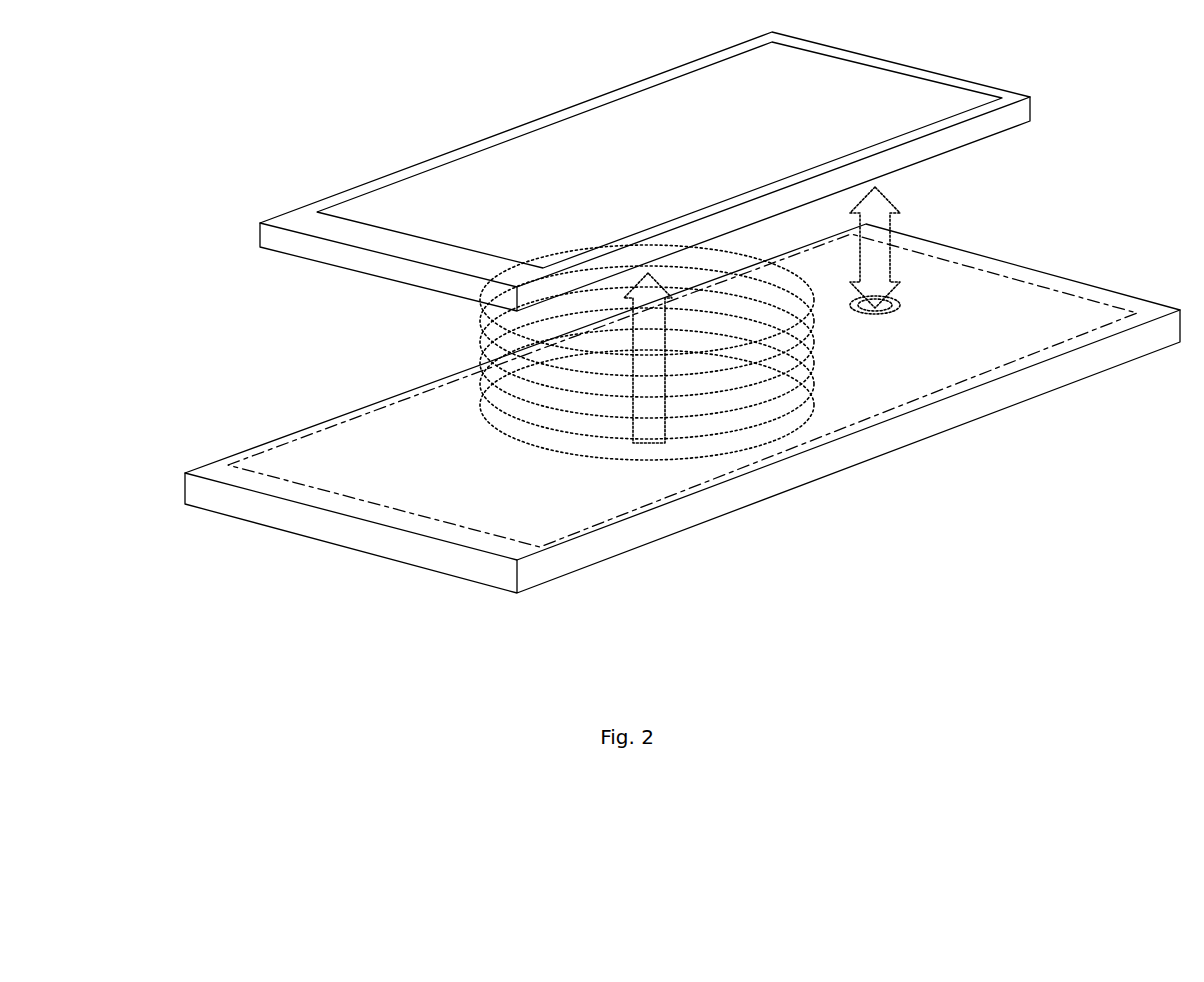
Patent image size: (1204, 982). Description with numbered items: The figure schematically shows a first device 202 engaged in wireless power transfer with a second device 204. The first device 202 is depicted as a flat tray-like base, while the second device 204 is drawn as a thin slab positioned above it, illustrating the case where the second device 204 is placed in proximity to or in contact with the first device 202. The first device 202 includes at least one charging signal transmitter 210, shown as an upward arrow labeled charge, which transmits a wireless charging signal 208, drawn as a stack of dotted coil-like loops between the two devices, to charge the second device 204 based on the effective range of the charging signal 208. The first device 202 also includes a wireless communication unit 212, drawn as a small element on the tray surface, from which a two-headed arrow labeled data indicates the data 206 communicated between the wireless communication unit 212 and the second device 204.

The first device 202 is at (425, 568).
The second device 204 is at (258, 232).
The data 206 is at (887, 223).
The wireless charging signal 208 is at (813, 365).
The charging signal transmitter 210 is at (631, 384).
The wireless communication unit 212 is at (900, 313).